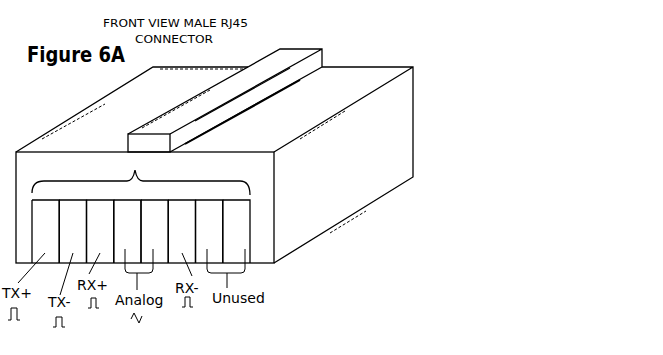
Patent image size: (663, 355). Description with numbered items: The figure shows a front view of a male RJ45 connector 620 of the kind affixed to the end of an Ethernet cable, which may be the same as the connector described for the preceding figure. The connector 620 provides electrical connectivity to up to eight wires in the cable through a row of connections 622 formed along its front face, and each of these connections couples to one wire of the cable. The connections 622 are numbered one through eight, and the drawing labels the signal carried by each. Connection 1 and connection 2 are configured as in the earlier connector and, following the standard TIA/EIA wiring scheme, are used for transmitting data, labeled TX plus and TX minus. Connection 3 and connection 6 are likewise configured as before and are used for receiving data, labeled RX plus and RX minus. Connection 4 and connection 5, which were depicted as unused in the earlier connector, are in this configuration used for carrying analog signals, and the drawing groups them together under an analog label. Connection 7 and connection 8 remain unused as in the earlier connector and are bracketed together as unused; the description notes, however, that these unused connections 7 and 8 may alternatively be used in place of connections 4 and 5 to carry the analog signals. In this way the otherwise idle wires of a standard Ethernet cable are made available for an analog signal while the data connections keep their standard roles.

The connector 620 is at (350, 47).
The connections 622 is at (141, 210).
The connection 1 is at (45, 224).
The connection 2 is at (72, 224).
The connection 3 is at (100, 224).
The connection 4 is at (127, 224).
The connection 5 is at (154, 224).
The connection 6 is at (181, 224).
The connection 7 is at (209, 224).
The connection 8 is at (236, 224).